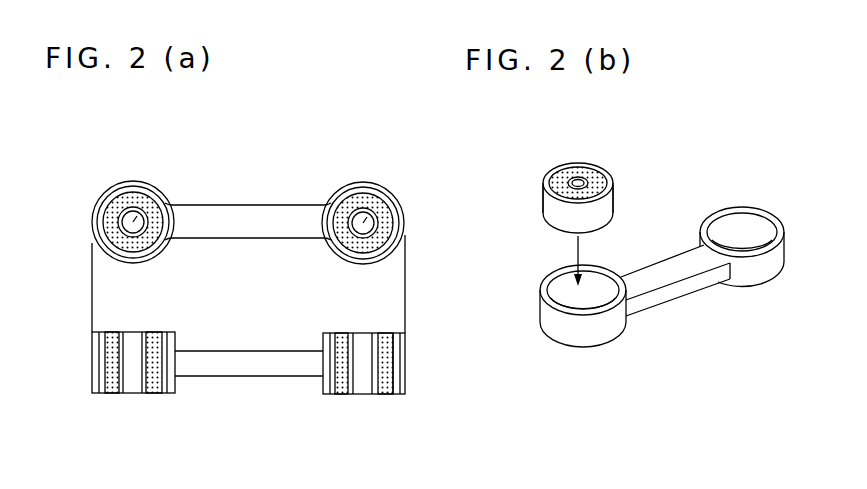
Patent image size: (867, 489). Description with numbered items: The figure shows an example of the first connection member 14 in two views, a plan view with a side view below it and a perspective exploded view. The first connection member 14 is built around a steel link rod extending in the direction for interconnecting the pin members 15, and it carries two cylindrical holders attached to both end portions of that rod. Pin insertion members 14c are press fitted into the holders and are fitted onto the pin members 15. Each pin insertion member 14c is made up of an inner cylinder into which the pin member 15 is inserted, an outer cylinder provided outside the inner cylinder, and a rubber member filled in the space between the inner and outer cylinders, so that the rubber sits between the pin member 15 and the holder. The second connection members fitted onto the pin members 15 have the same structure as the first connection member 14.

The first connection member 14 is at (252, 181).
The pin insertion member 14c is at (402, 206).
The pin member 15 is at (120, 183).